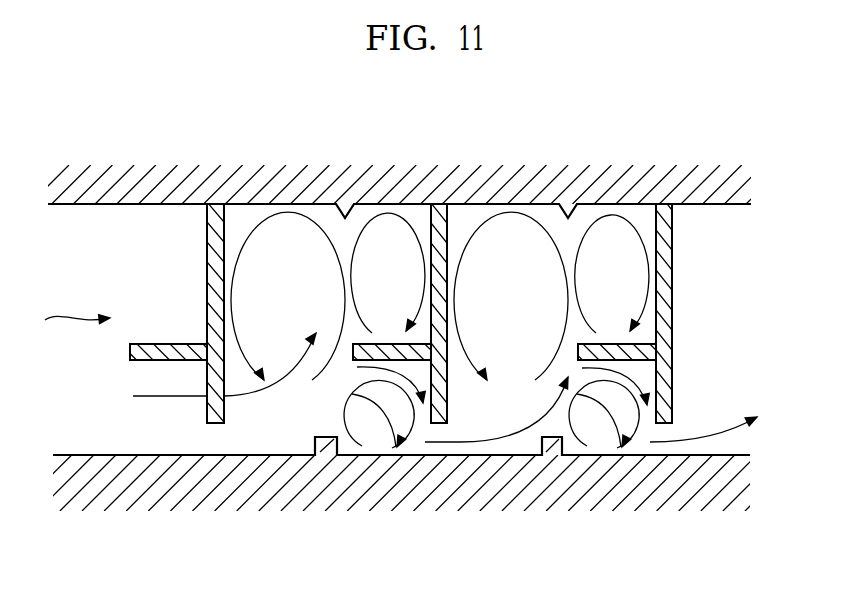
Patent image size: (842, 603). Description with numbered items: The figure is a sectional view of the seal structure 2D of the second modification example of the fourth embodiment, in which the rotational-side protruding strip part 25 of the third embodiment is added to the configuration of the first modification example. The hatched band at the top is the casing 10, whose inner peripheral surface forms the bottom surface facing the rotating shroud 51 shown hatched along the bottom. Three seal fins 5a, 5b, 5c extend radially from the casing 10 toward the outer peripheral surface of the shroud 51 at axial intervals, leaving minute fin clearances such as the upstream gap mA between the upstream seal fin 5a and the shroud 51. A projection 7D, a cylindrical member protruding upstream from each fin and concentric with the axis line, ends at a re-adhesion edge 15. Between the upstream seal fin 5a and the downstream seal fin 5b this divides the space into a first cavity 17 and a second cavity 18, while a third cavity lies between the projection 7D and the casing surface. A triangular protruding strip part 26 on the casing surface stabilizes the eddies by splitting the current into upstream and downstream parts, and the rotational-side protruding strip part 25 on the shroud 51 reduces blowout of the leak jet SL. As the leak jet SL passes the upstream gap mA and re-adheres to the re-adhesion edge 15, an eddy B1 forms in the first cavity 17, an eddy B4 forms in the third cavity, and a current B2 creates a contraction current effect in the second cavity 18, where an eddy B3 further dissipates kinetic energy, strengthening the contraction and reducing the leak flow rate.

The casing 10 is at (90, 206).
The triangular protruding strip part 26 is at (347, 214).
The upstream seal fin 5a is at (218, 226).
The downstream seal fin 5b is at (443, 223).
The seal fin 5c is at (665, 262).
The projection 7D is at (173, 343).
The shroud 51 is at (68, 462).
The rotational-side protruding strip part 25 is at (326, 456).
The seal structure 2D is at (63, 320).
The first cavity 17 is at (312, 253).
The re-adhesion edge 15 is at (130, 361).
The eddy B1 is at (238, 262).
The eddy B4 is at (354, 253).
The current B2 is at (448, 390).
The eddy B3 is at (375, 452).
The second cavity 18 is at (388, 412).
The upstream gap mA is at (207, 456).
The leak jet SL is at (258, 440).